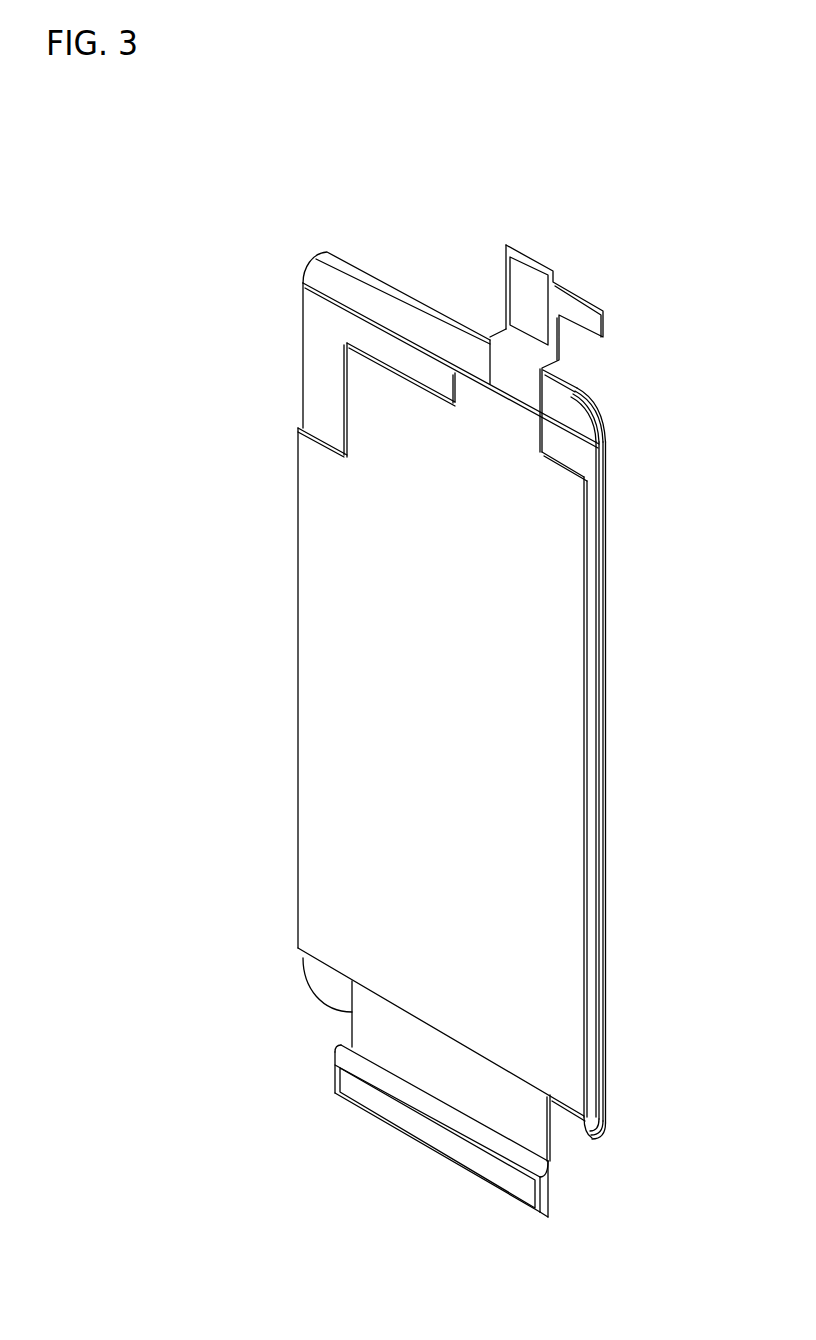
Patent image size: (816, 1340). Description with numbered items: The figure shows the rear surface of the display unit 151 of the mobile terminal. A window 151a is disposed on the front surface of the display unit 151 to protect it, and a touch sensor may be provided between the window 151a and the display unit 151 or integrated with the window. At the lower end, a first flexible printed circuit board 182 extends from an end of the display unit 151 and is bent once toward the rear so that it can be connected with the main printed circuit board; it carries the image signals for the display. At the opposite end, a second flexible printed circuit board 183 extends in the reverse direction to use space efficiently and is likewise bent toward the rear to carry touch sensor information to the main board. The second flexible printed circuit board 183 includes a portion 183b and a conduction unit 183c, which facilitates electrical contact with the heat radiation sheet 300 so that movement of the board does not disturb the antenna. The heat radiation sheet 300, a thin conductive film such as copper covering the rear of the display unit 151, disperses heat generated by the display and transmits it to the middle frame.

The display unit 151 is at (578, 466).
The window 151a is at (572, 417).
The first flexible printed circuit board 182 is at (538, 1127).
The second flexible printed circuit board 183 is at (574, 305).
The connection portion of flexible printed circuit board 183b is at (606, 323).
The conduction unit 183c is at (534, 289).
The heat radiation sheet 300 is at (562, 523).